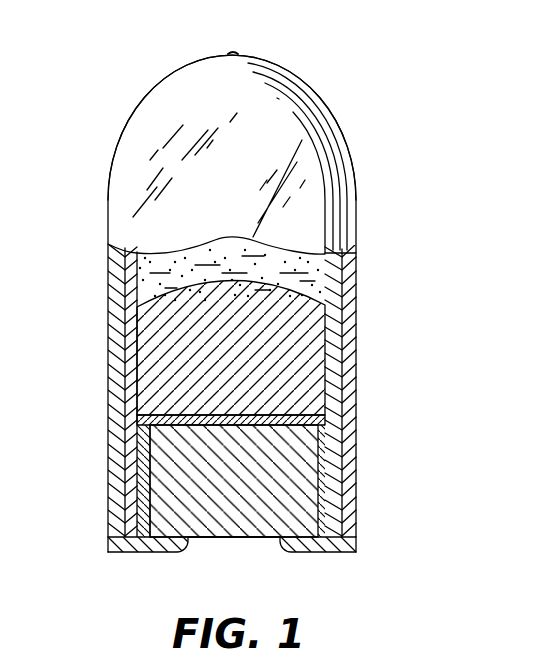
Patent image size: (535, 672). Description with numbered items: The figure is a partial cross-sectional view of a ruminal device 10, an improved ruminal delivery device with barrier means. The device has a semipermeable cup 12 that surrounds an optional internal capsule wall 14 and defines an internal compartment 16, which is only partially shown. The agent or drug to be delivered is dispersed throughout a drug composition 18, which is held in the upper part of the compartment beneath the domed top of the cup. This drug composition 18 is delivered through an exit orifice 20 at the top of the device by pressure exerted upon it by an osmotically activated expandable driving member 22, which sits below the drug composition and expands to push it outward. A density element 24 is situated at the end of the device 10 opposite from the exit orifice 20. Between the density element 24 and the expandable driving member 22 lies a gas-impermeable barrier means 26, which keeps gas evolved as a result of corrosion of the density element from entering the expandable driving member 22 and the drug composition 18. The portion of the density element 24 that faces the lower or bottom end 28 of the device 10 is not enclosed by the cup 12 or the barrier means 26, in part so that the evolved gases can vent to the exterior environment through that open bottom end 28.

The ruminal device 10 is at (388, 130).
The semipermeable cup 12 is at (108, 168).
The internal capsule wall 14 is at (350, 300).
The internal compartment 16 is at (355, 397).
The drug composition 18 is at (350, 266).
The exit orifice 20 is at (234, 53).
The osmotically activated expandable driving member 22 is at (315, 366).
The density element 24 is at (292, 491).
The gas-impermeable barrier means 26 is at (148, 482).
The bottom end 28 is at (240, 537).